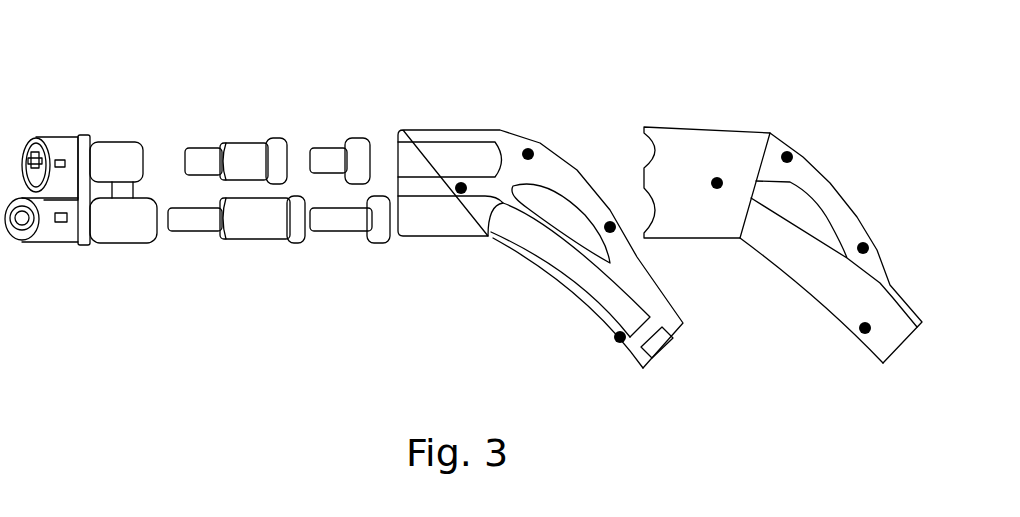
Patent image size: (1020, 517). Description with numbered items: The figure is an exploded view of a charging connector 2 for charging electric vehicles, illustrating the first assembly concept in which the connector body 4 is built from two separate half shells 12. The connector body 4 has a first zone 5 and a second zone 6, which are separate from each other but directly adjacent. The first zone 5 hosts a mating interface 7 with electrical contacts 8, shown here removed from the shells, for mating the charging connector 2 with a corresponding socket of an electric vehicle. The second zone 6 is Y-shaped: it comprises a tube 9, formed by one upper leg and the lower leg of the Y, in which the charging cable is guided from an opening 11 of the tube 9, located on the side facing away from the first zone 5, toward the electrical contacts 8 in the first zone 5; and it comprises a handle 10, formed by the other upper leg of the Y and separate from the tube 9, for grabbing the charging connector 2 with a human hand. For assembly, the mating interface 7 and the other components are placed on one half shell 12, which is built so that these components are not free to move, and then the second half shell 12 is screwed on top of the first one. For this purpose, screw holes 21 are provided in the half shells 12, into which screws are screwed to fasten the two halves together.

The charging connector 2 is at (606, 238).
The connector body 4 is at (647, 78).
The first zone 5 is at (483, 127).
The second zone 6 is at (597, 305).
The mating interface 7 is at (53, 233).
The electrical contacts 8 is at (340, 147).
The tube 9 is at (545, 247).
The handle 10 is at (553, 160).
The opening 11 is at (657, 347).
The half shells 12 is at (490, 237).
The screw holes 21 is at (716, 183).